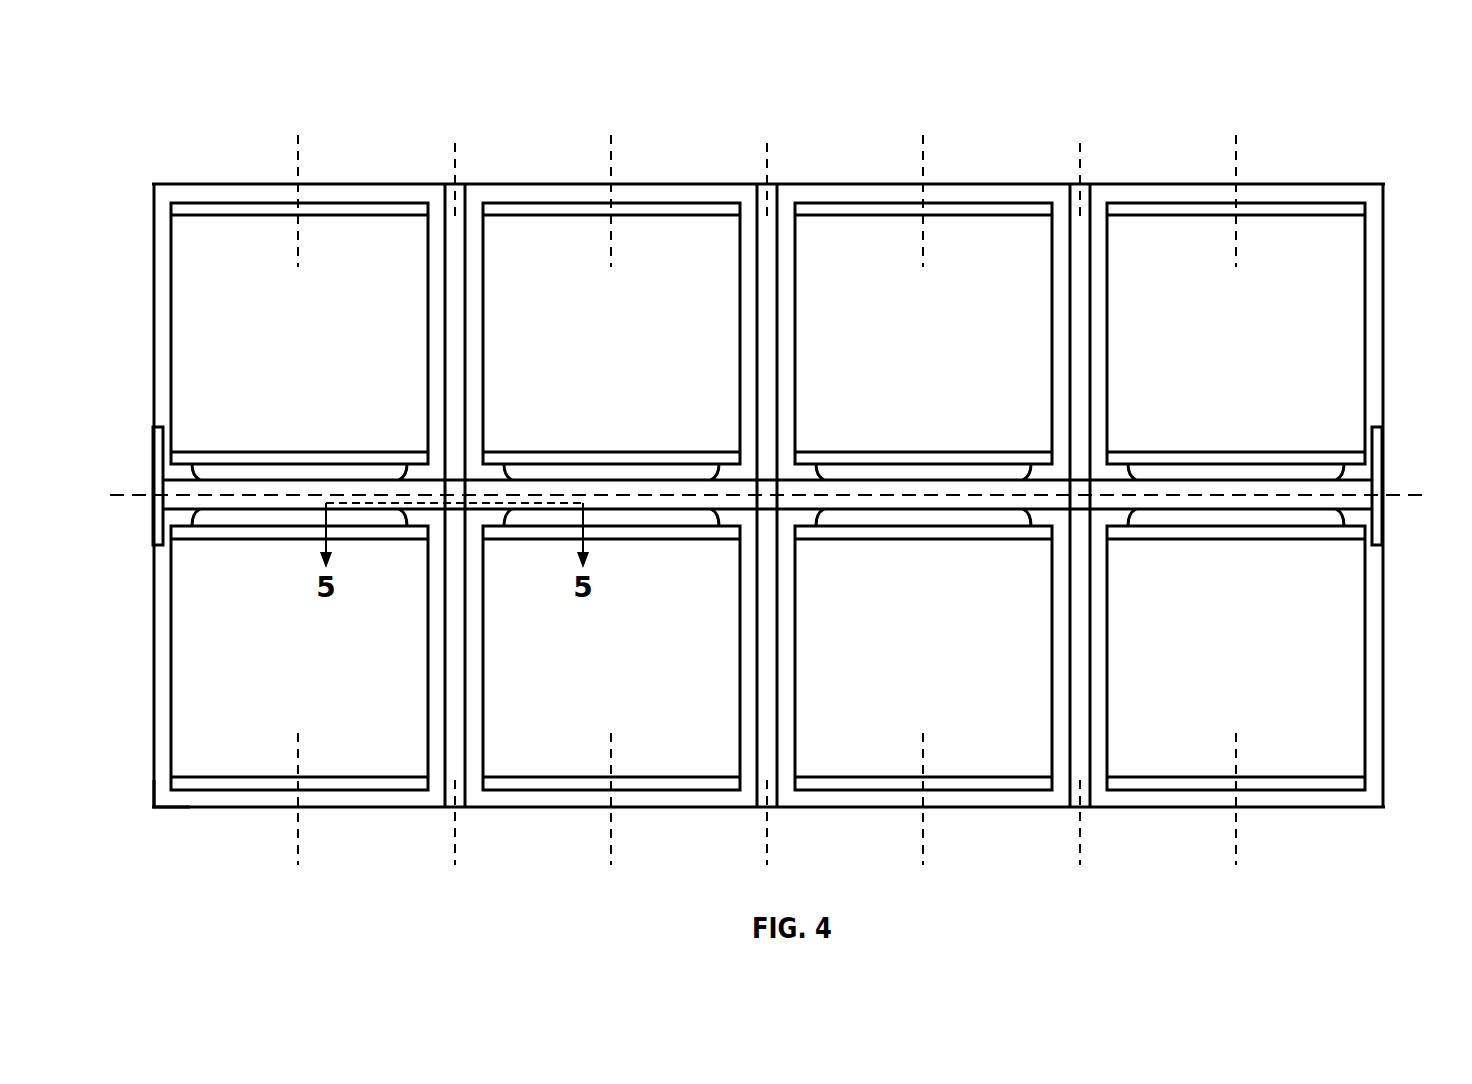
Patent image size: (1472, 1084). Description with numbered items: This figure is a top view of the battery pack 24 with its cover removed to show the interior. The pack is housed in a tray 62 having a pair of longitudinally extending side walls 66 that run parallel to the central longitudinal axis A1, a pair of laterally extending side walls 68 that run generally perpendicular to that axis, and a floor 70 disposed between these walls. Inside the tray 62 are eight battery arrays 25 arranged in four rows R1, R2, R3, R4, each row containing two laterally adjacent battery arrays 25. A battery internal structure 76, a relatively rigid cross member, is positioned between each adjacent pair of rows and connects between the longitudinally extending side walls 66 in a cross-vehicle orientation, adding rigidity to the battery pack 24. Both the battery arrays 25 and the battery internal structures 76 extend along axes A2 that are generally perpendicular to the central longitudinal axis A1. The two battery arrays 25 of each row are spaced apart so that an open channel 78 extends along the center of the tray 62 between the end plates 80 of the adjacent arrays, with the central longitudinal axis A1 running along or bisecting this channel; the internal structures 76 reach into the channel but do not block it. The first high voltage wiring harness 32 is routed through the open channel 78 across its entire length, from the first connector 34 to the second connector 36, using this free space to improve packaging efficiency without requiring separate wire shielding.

The battery pack 24 is at (172, 94).
The tray 62 is at (145, 175).
The longitudinally extending side walls 66 is at (872, 184).
The laterally extending side walls 68 is at (152, 718).
The floor 70 is at (165, 800).
The battery array 25 is at (284, 347).
The end plates 80 is at (290, 458).
The battery internal structure 76 is at (455, 808).
The first high voltage wiring harness 32 is at (740, 490).
The first connector 34 is at (157, 427).
The second connector 36 is at (1380, 470).
The open channel 78 is at (290, 528).
The first row R1 is at (213, 175).
The second row R2 is at (528, 175).
The third row R3 is at (843, 175).
The fourth row R4 is at (1162, 175).
The central longitudinal axis A1 is at (132, 493).
The axes A2 is at (298, 163).